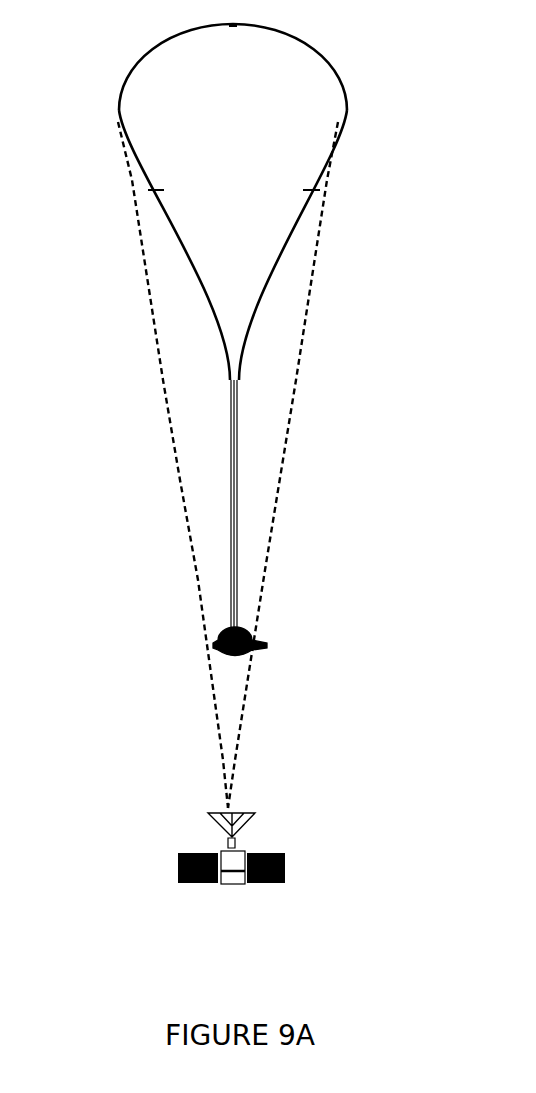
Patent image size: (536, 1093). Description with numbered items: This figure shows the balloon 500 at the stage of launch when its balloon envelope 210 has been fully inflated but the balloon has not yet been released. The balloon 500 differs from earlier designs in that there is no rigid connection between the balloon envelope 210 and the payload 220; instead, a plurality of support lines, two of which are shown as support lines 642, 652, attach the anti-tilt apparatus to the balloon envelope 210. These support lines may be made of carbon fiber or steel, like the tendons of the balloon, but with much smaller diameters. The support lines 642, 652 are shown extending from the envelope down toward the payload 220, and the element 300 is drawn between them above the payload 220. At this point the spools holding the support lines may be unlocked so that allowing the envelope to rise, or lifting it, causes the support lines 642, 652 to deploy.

The balloon 500 is at (117, 37).
The balloon envelope 210 is at (185, 250).
The support line 652 is at (178, 467).
The support line 642 is at (288, 437).
The antenna 300 is at (208, 815).
The payload 220 is at (220, 852).